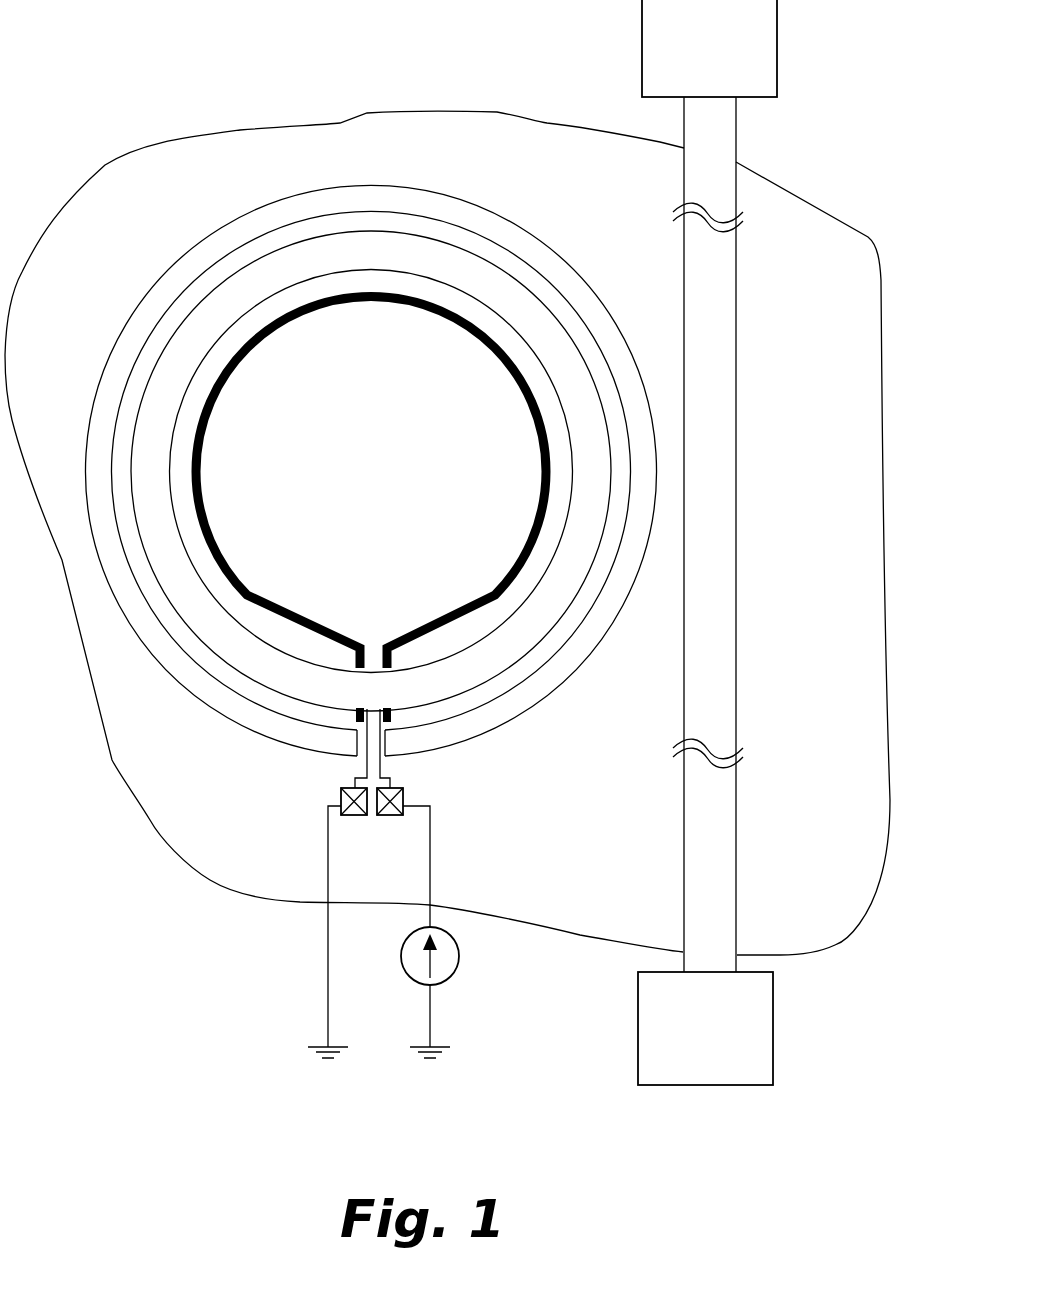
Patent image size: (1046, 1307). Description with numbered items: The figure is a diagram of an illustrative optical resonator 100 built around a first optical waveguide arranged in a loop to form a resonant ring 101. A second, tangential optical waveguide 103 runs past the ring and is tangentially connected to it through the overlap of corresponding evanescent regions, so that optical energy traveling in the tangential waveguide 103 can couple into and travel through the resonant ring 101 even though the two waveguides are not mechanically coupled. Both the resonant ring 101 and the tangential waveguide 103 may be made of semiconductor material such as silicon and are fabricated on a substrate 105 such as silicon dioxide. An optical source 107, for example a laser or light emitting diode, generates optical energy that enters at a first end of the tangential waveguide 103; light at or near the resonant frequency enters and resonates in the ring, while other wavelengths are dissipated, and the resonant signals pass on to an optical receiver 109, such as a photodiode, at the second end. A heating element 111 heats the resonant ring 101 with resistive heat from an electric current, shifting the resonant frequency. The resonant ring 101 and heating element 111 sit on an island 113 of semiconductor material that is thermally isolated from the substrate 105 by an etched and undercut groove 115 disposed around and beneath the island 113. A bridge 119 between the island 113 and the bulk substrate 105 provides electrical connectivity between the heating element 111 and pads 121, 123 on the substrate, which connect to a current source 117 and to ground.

The optical resonator 100 is at (113, 92).
The resonant ring 101 is at (165, 400).
The tangential optical waveguide 103 is at (713, 251).
The substrate 105 is at (507, 158).
The optical source 107 is at (725, 1078).
The optical receiver 109 is at (725, 90).
The heating element 111 is at (545, 455).
The island 113 is at (182, 313).
The groove 115 is at (140, 620).
The current source 117 is at (458, 962).
The bridge 119 is at (388, 741).
The pad 121 is at (403, 797).
The pad 123 is at (341, 797).